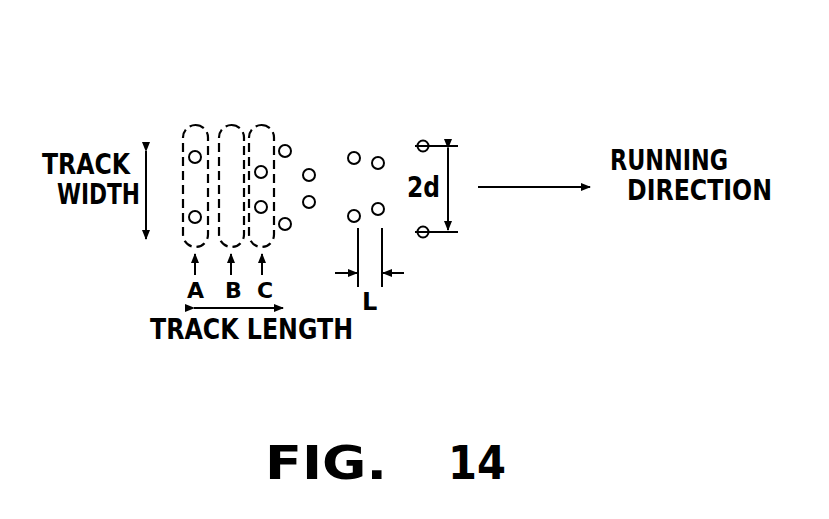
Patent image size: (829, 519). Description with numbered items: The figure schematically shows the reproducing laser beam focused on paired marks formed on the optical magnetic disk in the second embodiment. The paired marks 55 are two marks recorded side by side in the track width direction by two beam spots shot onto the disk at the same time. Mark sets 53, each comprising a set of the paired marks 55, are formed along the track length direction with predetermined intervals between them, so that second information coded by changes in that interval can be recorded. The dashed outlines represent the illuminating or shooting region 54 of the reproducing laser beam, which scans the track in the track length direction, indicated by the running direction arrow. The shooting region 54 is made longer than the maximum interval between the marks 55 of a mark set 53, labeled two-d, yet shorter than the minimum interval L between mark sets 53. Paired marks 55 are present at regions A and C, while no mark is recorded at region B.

The mark set 53 is at (325, 77).
The illuminating or shooting region 54 is at (196, 122).
The paired marks 55 is at (352, 212).